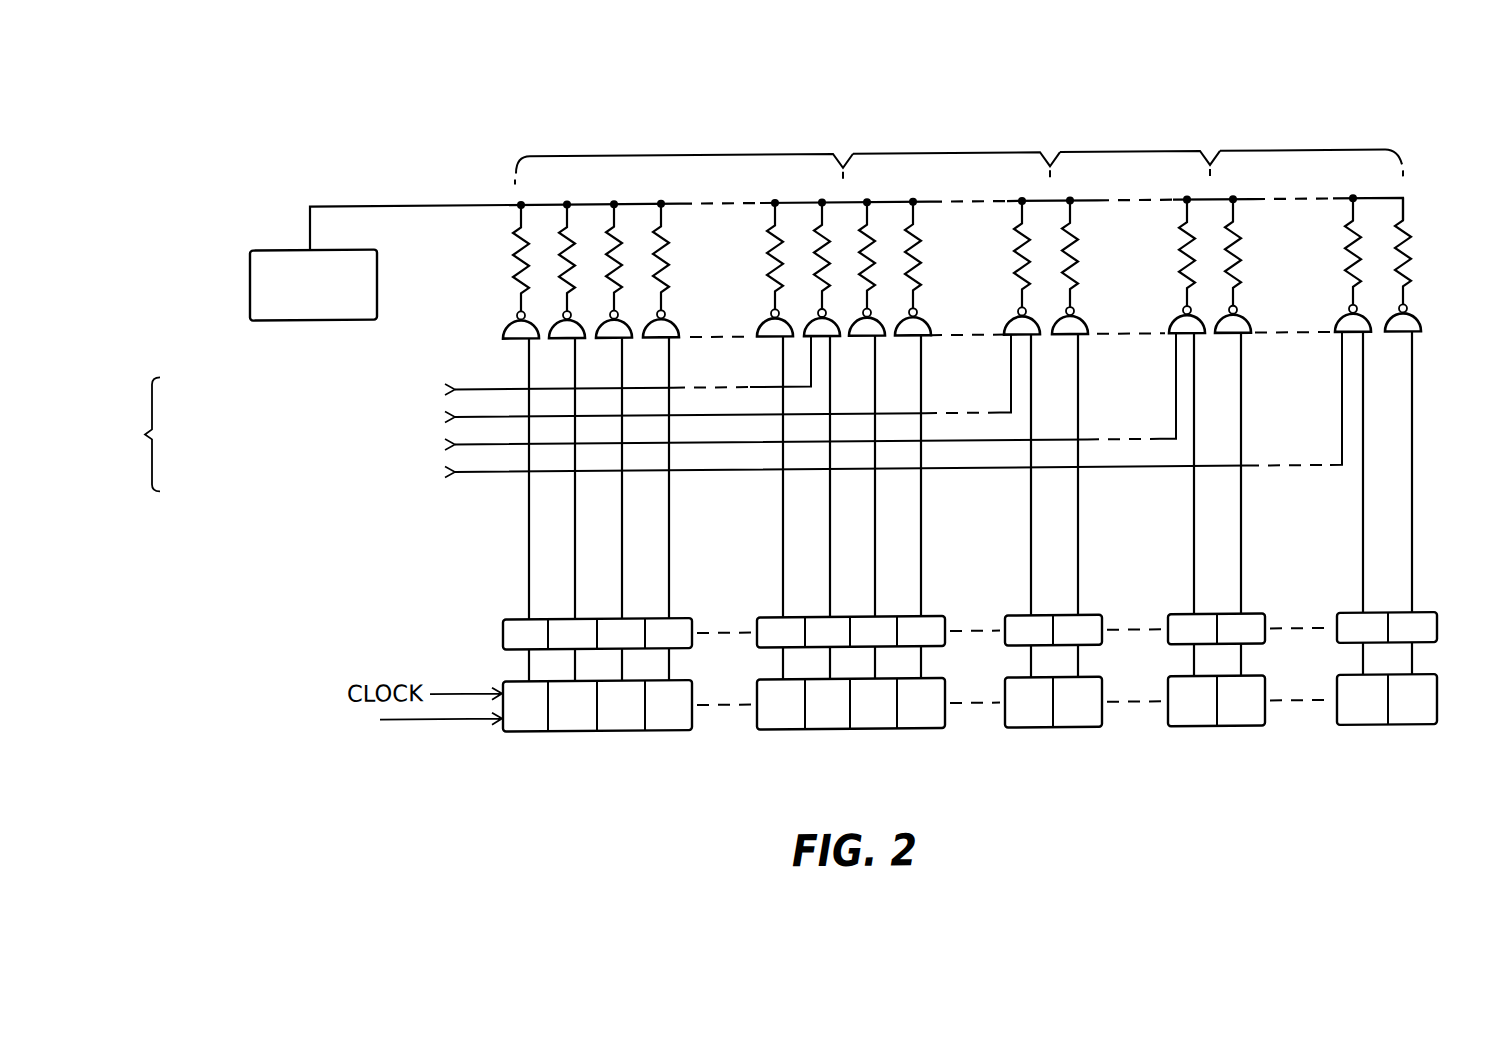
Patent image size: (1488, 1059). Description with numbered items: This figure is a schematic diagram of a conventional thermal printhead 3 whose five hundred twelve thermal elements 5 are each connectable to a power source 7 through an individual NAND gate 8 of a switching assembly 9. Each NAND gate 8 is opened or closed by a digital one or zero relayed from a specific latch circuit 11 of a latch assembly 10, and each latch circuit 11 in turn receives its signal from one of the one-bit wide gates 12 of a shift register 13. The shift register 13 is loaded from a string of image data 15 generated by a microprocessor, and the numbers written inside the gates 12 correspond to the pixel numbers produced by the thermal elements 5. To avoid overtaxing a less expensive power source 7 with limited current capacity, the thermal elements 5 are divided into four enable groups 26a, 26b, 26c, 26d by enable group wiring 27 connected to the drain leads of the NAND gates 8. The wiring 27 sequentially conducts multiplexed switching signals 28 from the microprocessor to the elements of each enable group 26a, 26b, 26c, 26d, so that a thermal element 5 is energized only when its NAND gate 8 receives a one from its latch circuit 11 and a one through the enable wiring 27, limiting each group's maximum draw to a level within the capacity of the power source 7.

The printhead 3 is at (484, 124).
The thermal elements 5 is at (528, 216).
The power source 7 is at (379, 273).
The NAND gate 8 is at (607, 327).
The switching assembly 9 is at (1427, 337).
The latch assembly 10 is at (995, 601).
The latch circuit 11 is at (656, 618).
The one-bit wide gates 12 is at (526, 730).
The shift register 13 is at (995, 715).
The string of image data 15 is at (400, 719).
The enable group 26a is at (680, 140).
The enable group 26b is at (942, 140).
The enable group 26c is at (1153, 128).
The enable group 26d is at (1324, 128).
The enable group wiring 27 is at (146, 430).
The multiplexed switching signals 28 is at (480, 388).